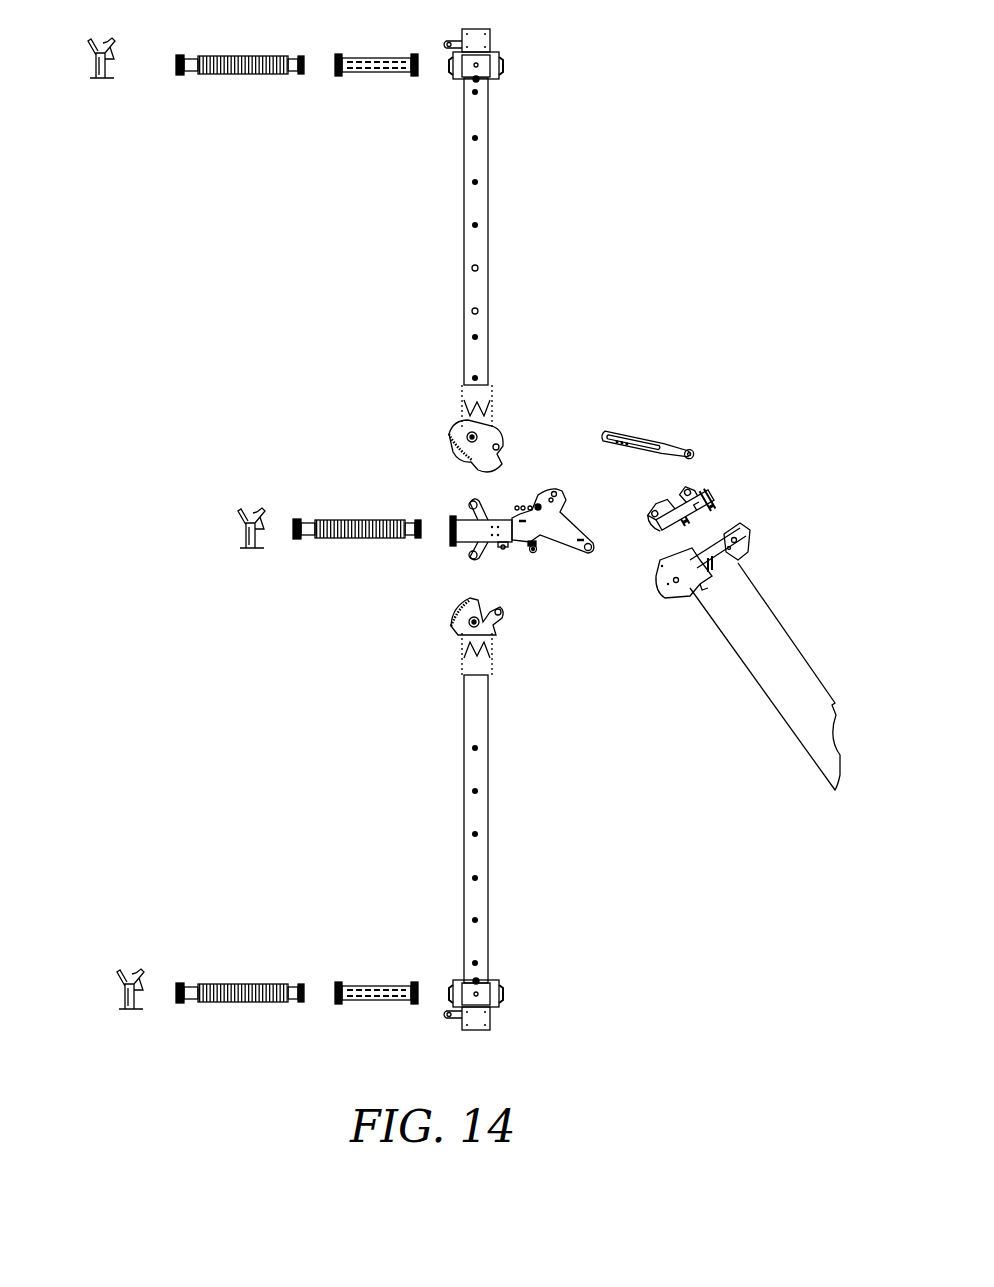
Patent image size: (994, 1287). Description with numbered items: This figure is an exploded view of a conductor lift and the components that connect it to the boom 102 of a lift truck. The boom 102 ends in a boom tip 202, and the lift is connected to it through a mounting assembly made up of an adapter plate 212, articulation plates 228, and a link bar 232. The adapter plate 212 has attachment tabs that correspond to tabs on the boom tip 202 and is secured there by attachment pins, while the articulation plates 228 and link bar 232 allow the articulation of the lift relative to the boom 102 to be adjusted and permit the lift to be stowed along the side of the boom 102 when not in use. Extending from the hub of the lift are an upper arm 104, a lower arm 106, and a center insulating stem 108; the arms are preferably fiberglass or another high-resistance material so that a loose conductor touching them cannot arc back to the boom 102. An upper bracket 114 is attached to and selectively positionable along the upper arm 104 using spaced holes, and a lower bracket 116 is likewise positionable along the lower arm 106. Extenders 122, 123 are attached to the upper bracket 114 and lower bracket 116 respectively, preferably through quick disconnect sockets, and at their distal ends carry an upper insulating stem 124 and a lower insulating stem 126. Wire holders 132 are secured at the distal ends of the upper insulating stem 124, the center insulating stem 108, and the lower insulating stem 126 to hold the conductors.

The boom 102 is at (748, 645).
The upper arm 104 is at (467, 243).
The lower arm 106 is at (468, 818).
The center insulating stem 108 is at (370, 520).
The upper bracket 114 is at (498, 65).
The lower bracket 116 is at (495, 993).
The extender 122 is at (380, 68).
The extender 123 is at (375, 1000).
The upper insulating stem 124 is at (227, 73).
The lower insulating stem 126 is at (228, 1000).
The wire holder 132 is at (108, 72).
The boom tip 202 is at (733, 518).
The adapter plate 212 is at (712, 488).
The articulation plates 228 is at (540, 532).
The link bar 232 is at (643, 440).